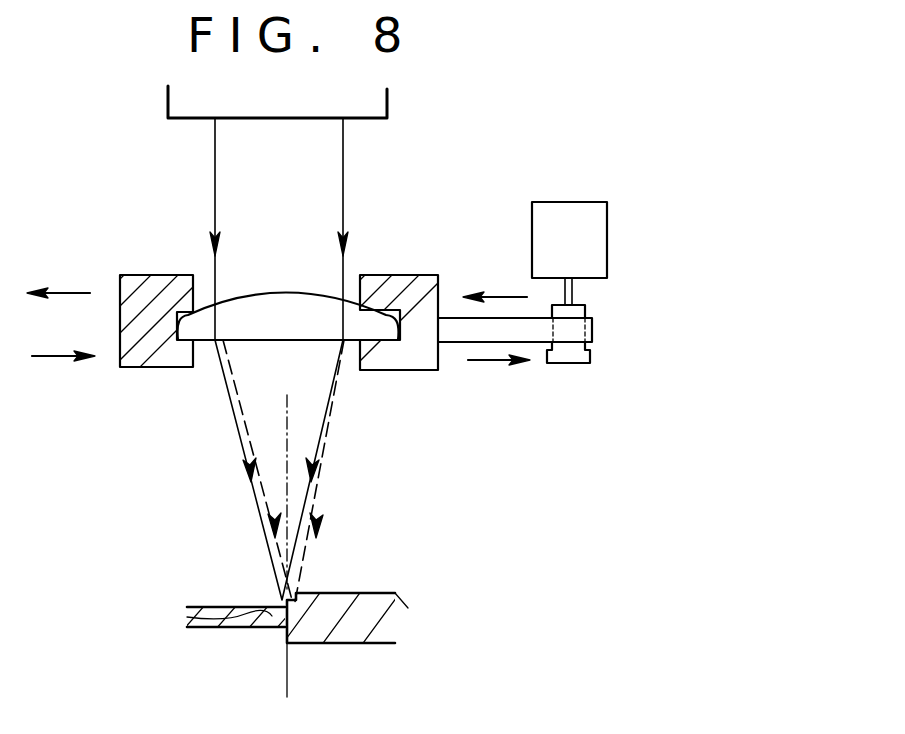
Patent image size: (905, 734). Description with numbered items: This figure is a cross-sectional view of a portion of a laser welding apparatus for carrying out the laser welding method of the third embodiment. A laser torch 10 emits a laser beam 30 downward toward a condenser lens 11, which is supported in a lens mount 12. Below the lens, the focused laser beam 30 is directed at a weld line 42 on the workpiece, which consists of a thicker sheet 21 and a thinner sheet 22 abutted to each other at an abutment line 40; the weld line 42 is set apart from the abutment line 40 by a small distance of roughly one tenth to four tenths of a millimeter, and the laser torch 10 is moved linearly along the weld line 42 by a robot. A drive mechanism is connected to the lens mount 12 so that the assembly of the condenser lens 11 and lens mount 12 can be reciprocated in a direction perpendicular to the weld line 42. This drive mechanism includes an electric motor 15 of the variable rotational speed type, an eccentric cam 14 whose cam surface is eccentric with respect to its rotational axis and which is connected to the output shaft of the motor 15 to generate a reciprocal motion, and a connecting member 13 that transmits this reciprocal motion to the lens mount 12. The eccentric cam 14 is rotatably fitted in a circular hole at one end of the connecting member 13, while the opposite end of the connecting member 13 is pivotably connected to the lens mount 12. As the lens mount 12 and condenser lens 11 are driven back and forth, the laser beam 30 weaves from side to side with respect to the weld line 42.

The laser torch 10 is at (388, 92).
The laser beam 30 is at (346, 173).
The condenser lens 11 is at (187, 310).
The lens mount 12 is at (148, 347).
The connecting member 13 is at (462, 333).
The eccentric cam 14 is at (565, 352).
The electric motor 15 is at (545, 258).
The thicker sheet 21 is at (367, 615).
The thinner sheet 22 is at (205, 606).
The abutment line 40 is at (187, 617).
The weld line 42 is at (294, 590).